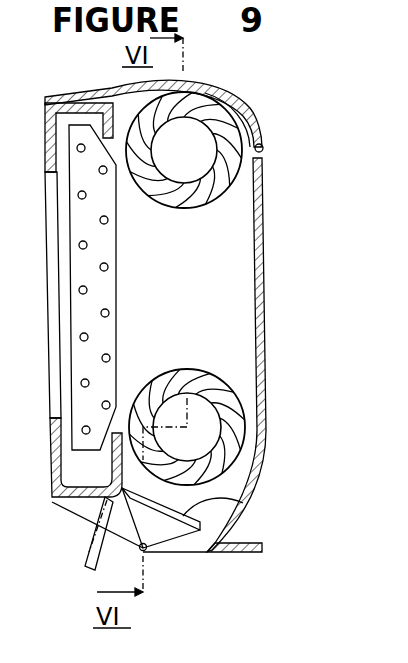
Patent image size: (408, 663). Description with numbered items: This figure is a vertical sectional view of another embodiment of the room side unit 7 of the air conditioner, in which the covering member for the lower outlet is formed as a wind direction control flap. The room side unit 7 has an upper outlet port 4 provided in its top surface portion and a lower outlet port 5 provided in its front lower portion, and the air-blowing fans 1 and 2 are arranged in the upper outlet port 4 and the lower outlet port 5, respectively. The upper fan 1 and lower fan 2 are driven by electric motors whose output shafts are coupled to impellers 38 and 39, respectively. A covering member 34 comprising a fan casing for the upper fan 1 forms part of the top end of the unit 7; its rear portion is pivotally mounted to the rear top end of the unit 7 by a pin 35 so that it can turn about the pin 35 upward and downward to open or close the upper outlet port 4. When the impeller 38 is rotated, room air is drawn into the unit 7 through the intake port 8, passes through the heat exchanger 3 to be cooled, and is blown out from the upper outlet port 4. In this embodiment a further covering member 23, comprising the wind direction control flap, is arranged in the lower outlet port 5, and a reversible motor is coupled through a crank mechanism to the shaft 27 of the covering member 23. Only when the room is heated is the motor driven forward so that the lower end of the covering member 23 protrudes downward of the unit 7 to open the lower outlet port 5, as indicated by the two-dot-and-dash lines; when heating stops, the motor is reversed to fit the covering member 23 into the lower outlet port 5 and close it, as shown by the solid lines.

The upper air-blowing fan 1 is at (229, 200).
The lower air-blowing fan 2 is at (234, 379).
The heat exchanger 3 is at (117, 297).
The upper outlet port 4 is at (125, 106).
The lower outlet port 5 is at (197, 554).
The room side unit 7 is at (266, 263).
The intake port 8 is at (46, 253).
The covering member 23 is at (147, 523).
The shaft 27 is at (183, 553).
The covering member 34 is at (238, 96).
The pin 35 is at (264, 148).
The impeller 38 is at (228, 141).
The impeller 39 is at (232, 428).